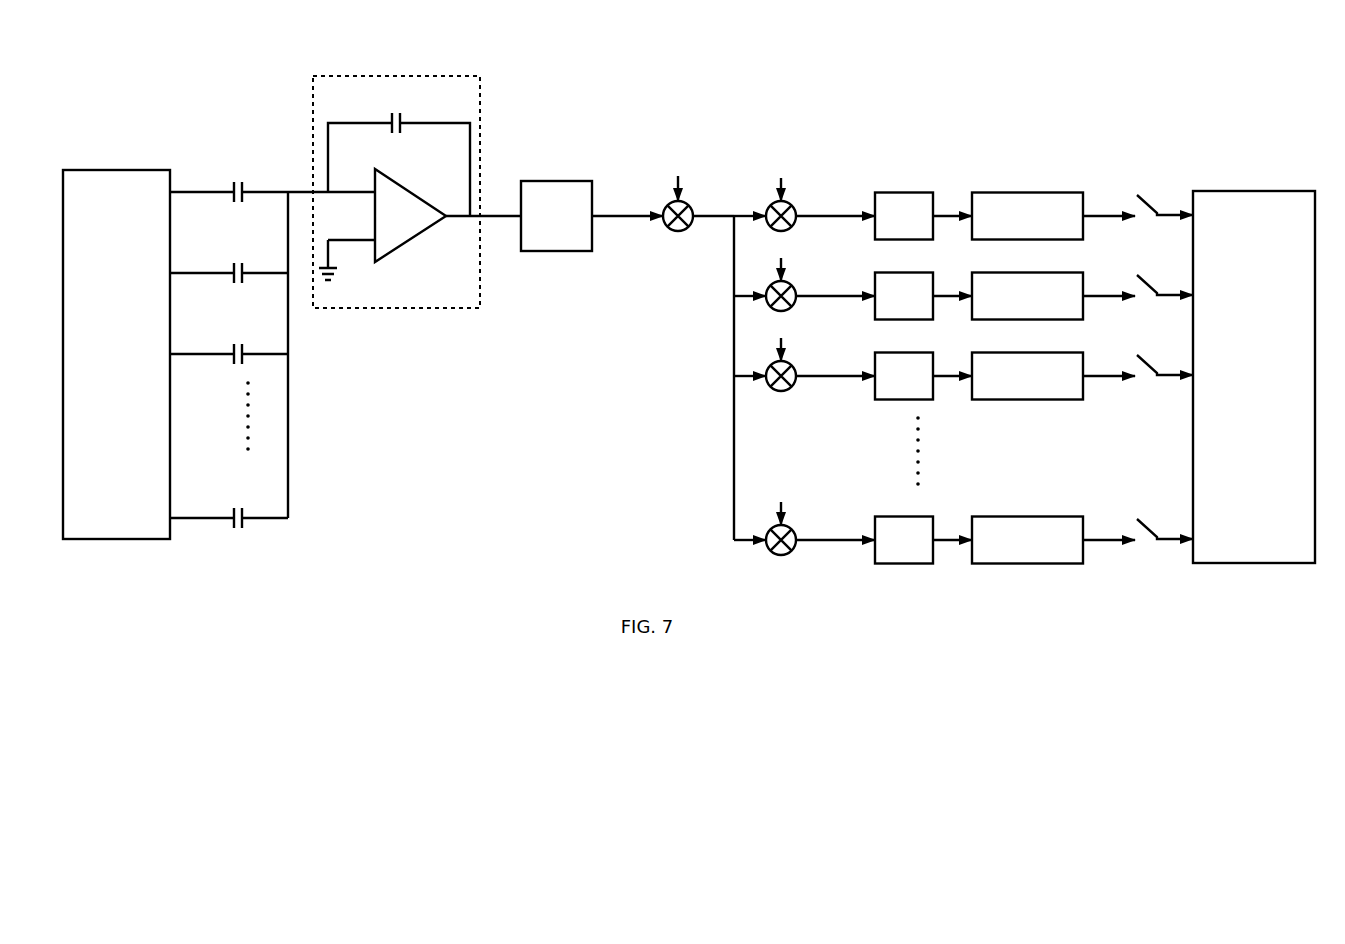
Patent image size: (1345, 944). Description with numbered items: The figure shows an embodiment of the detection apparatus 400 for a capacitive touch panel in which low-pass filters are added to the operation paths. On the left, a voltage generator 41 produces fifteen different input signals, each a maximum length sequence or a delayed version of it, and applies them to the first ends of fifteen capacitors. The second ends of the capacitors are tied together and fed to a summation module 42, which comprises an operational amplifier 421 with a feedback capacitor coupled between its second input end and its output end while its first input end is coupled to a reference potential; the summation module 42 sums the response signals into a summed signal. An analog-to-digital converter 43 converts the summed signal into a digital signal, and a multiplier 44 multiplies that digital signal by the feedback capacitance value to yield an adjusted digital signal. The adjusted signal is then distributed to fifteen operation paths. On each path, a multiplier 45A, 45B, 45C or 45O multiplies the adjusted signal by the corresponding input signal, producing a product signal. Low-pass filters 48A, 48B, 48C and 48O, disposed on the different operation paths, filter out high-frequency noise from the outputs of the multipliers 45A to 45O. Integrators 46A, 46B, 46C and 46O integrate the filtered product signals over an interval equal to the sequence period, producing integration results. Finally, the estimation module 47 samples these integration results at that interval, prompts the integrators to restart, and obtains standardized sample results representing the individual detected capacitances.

The detection apparatus 400 is at (95, 61).
The voltage generator 41 is at (126, 170).
The summation module 42 is at (404, 308).
The operational amplifier 421 is at (413, 237).
The analog-to-digital converter 43 is at (575, 181).
The multiplier 44 is at (667, 231).
The multiplier 45A is at (794, 205).
The multiplier 45B is at (794, 285).
The multiplier 45C is at (794, 365).
The multiplier 45O is at (794, 529).
The low-pass filter 48A is at (929, 192).
The low-pass filter 48B is at (929, 272).
The low-pass filter 48C is at (929, 352).
The low-pass filter 48O is at (929, 516).
The integrator 46A is at (1084, 177).
The integrator 46B is at (1084, 257).
The integrator 46C is at (1084, 337).
The integrator 46O is at (1084, 501).
The estimation module 47 is at (1240, 191).